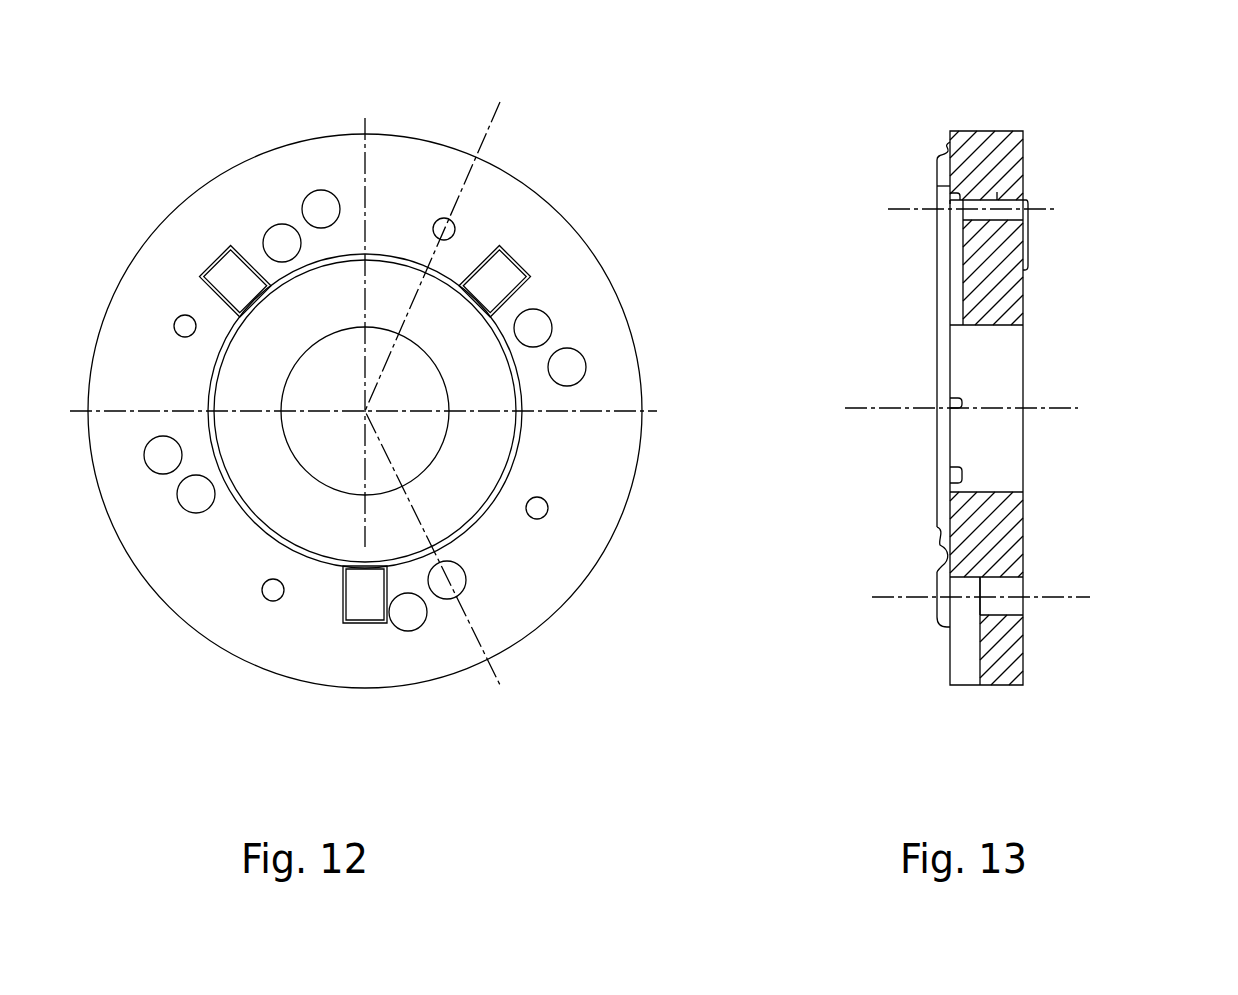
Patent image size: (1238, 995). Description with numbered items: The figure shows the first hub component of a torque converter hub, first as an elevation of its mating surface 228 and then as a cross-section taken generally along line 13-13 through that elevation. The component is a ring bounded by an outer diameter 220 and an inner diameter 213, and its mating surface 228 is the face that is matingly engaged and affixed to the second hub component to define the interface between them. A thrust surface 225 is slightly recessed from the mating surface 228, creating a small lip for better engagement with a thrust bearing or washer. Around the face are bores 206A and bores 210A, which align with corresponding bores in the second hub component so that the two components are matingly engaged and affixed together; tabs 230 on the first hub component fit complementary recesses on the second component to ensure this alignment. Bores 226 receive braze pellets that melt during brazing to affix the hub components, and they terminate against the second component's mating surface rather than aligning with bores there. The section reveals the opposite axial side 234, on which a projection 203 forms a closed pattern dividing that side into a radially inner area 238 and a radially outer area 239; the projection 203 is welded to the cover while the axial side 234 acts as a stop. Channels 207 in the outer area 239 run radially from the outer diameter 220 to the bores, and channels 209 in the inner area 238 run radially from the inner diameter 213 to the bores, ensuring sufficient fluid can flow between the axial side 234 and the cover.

In FIG. 12, the section line 13- 13 is at (498, 101).
In FIG. 12, the outer diameter 220 is at (600, 255).
In FIG. 13, the outer diameter 220 is at (1013, 690).
In FIG. 12, the thrust surface 225 is at (302, 508).
In FIG. 13, the thrust surface 225 is at (1027, 305).
In FIG. 12, the inner diameter 213 is at (300, 366).
In FIG. 13, the inner diameter 213 is at (982, 487).
In FIG. 12, the tabs 230 is at (500, 273).
In FIG. 13, the tabs 230 is at (1027, 240).
In FIG. 12, the bores 226 is at (282, 224).
In FIG. 12, the bores 206A is at (407, 632).
In FIG. 13, the bores 206A is at (1013, 620).
In FIG. 12, the bores 210A is at (185, 314).
In FIG. 13, the bores 210A is at (997, 192).
In FIG. 12, the mating surface 228 is at (583, 527).
In FIG. 13, the mating surface 228 is at (1025, 149).
In FIG. 13, the axial side 234 is at (945, 513).
In FIG. 13, the projection 203 is at (943, 573).
In FIG. 13, the channels 207 is at (950, 663).
In FIG. 13, the radially inner area 238 is at (937, 186).
In FIG. 13, the radially outer area 239 is at (948, 150).
In FIG. 13, the channels 209 is at (950, 203).